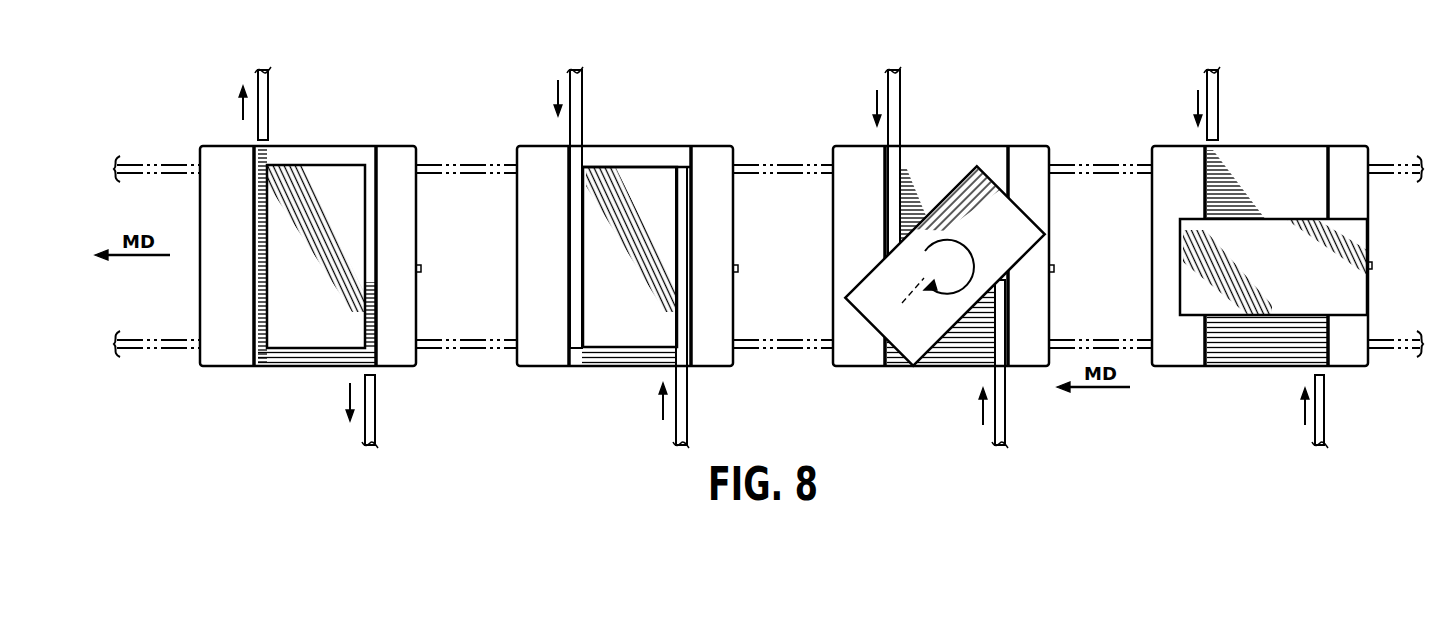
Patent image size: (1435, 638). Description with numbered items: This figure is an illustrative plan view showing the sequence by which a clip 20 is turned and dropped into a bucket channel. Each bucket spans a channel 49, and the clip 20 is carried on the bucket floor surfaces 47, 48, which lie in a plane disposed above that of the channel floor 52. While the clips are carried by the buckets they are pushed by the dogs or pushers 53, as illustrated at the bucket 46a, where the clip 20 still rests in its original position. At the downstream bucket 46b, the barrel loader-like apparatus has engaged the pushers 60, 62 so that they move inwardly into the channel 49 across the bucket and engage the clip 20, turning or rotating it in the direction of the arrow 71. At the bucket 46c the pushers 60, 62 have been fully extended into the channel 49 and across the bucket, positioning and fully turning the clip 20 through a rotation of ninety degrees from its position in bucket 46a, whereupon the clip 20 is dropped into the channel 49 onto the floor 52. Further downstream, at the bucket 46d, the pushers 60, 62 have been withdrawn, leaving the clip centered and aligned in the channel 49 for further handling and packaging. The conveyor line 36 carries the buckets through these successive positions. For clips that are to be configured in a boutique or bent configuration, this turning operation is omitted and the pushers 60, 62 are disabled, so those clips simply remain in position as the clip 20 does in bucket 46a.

The clip 20 is at (303, 299).
The conveyor line 36 is at (157, 165).
The bucket 46a is at (1174, 377).
The bucket 46b is at (857, 377).
The bucket 46c is at (541, 377).
The bucket 46d is at (224, 377).
The floor surface 47 is at (405, 334).
The floor surface 48 is at (218, 199).
The channel 49 is at (334, 141).
The channel floor 52 is at (336, 360).
The pusher 53 is at (421, 268).
The pusher 60 is at (269, 99).
The pusher 62 is at (376, 443).
The arrow 71 is at (972, 250).